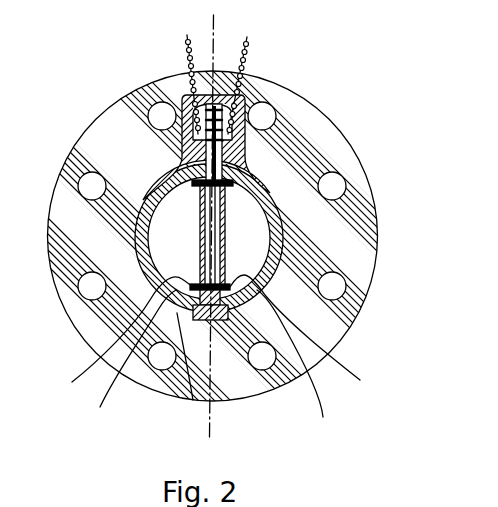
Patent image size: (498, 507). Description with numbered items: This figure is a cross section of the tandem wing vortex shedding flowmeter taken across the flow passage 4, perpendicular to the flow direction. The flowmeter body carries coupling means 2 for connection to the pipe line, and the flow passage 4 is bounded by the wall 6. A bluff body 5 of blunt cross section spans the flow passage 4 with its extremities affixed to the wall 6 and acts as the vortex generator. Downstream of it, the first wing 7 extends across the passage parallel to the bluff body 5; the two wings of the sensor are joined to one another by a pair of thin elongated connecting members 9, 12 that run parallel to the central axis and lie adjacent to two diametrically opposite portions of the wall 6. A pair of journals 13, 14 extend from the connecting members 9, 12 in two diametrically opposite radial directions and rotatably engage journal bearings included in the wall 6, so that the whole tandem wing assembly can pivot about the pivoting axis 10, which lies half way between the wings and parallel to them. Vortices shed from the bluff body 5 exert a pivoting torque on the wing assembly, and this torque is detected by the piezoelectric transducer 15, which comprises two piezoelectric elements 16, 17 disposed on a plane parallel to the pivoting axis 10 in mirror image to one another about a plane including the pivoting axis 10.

The coupling means 2 is at (97, 143).
The flow passage 4 is at (295, 364).
The bluff body 5 is at (124, 338).
The wall 6 is at (181, 245).
The first wing 7 is at (300, 339).
The connecting member 9 is at (140, 363).
The pivoting axis 10 is at (213, 20).
The connecting member 12 is at (270, 212).
The journal 13 is at (177, 396).
The journal 14 is at (262, 195).
The piezoelectric transducer 15 is at (247, 140).
The piezoelectric element 16 is at (197, 131).
The piezoelectric element 17 is at (245, 124).